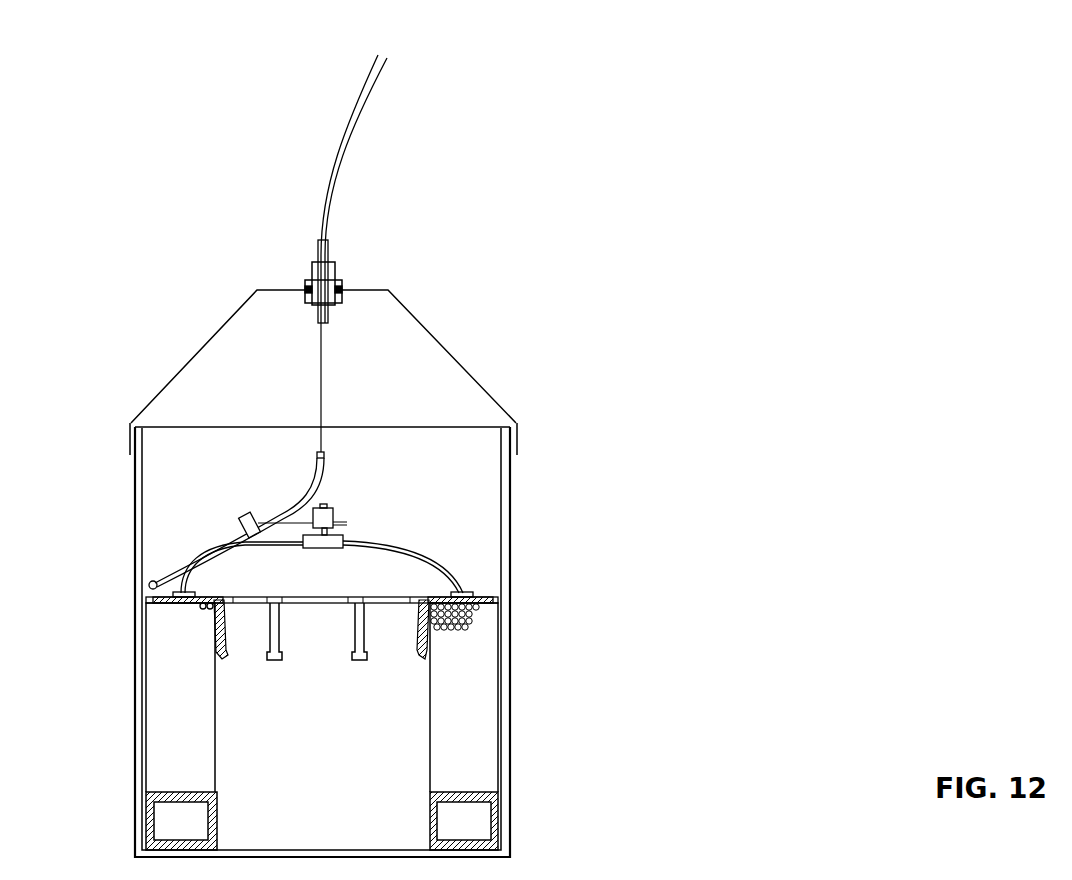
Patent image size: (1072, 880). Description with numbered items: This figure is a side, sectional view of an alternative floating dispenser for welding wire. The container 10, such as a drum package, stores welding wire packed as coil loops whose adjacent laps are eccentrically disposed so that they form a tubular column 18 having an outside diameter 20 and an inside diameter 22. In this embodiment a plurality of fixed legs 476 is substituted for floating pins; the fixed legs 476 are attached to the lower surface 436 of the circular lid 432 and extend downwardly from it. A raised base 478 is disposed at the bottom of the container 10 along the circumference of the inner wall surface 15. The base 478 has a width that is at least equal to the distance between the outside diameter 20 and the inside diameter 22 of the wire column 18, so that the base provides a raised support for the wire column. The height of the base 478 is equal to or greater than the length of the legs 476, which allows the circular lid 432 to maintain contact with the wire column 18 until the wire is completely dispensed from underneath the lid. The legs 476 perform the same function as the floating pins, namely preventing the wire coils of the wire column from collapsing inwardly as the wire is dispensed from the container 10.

The container 10 is at (530, 778).
The inner wall surface 15 is at (501, 491).
The tubular column 18 is at (488, 718).
The outside diameter 20 is at (502, 637).
The inside diameter 22 is at (430, 703).
The circular lid 432 is at (438, 582).
The lower surface 436 is at (222, 600).
The fixed legs 476 is at (354, 661).
The raised base 478 is at (497, 838).